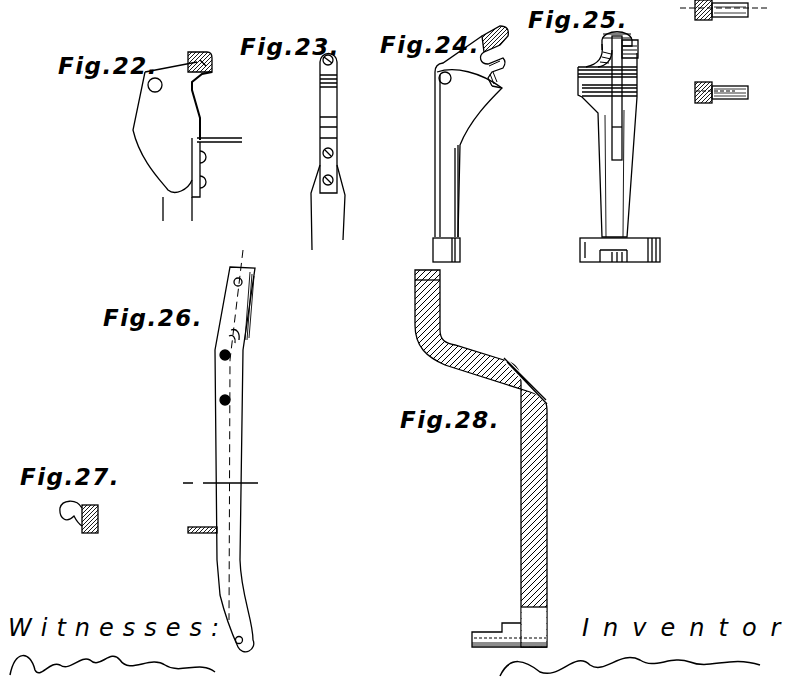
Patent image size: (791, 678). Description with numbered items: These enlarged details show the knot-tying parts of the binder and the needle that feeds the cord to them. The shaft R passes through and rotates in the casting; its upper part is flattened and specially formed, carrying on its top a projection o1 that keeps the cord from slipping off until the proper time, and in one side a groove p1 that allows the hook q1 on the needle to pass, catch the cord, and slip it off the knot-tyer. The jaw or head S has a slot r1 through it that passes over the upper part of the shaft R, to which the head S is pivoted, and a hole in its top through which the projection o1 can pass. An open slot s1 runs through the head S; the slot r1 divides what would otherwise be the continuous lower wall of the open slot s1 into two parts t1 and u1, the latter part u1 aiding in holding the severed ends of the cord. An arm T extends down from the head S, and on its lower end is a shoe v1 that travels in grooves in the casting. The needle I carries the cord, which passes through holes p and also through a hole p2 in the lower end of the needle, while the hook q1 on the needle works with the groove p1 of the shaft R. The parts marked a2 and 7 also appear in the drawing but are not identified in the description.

In FIG. 22, the shaft R is at (172, 141).
In FIG. 22, the projection o1 is at (200, 53).
In FIG. 23, the projection o1 is at (336, 55).
In FIG. 22, the groove p1 is at (215, 75).
In FIG. 23, the groove p1 is at (318, 72).
In FIG. 22, the arm a'' a2 is at (217, 167).
In FIG. 23, the arm a'' a2 is at (342, 157).
In FIG. 24, the arm T is at (457, 136).
In FIG. 25, the arm T is at (611, 145).
In FIG. 24, the open slot s1 is at (508, 42).
In FIG. 25, the open slot s1 is at (614, 35).
In FIG. 24, the lower wall part t1 is at (497, 69).
In FIG. 25, the lower wall part t1 is at (599, 44).
In FIG. 24, the jaw or head S is at (508, 94).
In FIG. 24, the shoe v1 is at (455, 250).
In FIG. 25, the shoe v1 is at (628, 250).
In FIG. 25, the slot r1 is at (633, 92).
In FIG. 25, the lower wall part u1 is at (645, 46).
In FIG. 25, the screw 7 is at (723, 55).
In FIG. 26, the needle I is at (220, 451).
In FIG. 27, the needle I is at (97, 519).
In FIG. 28, the needle I is at (481, 458).
In FIG. 26, the holes p is at (257, 272).
In FIG. 28, the holes p is at (476, 342).
In FIG. 26, the hook q1 is at (185, 527).
In FIG. 27, the hook q1 is at (59, 513).
In FIG. 26, the hole p2 is at (255, 643).